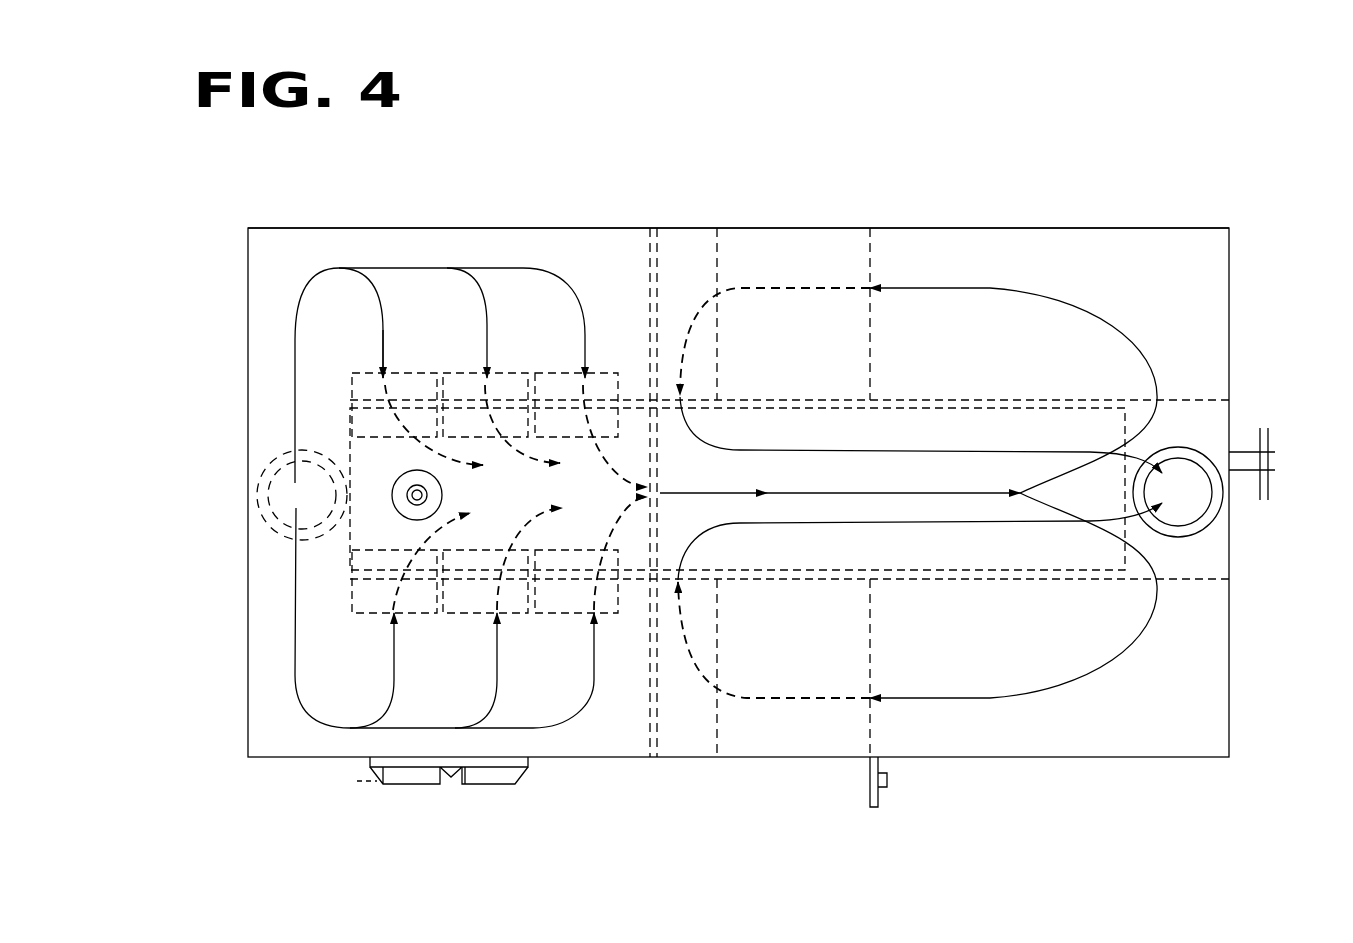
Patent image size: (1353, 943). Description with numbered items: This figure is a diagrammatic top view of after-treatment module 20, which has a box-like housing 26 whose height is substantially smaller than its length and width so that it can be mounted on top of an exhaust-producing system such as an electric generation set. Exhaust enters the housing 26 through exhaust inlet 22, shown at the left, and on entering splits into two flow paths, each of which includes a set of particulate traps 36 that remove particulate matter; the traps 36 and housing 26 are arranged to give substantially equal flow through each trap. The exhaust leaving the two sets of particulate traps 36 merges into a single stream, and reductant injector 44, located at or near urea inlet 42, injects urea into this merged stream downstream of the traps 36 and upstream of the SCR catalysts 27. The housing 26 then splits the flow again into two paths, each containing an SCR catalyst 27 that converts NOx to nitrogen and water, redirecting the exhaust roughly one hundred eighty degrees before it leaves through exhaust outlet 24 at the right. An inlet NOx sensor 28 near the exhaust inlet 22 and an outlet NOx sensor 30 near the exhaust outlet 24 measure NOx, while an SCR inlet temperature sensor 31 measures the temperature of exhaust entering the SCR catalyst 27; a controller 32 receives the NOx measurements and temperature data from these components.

The after-treatment module 20 is at (1262, 268).
The exhaust inlet 22 is at (272, 545).
The exhaust outlet 24 is at (1207, 531).
The housing 26 is at (1171, 228).
The SCR catalyst 27 is at (777, 323).
The inlet NOx sensor 28 is at (412, 785).
The outlet NOx sensor 30 is at (1240, 445).
The SCR inlet temperature sensor 31 is at (880, 792).
The controller 32 is at (488, 786).
The particulate traps 36 is at (370, 372).
The urea inlet 42 is at (382, 472).
The reductant injector 44 is at (412, 501).